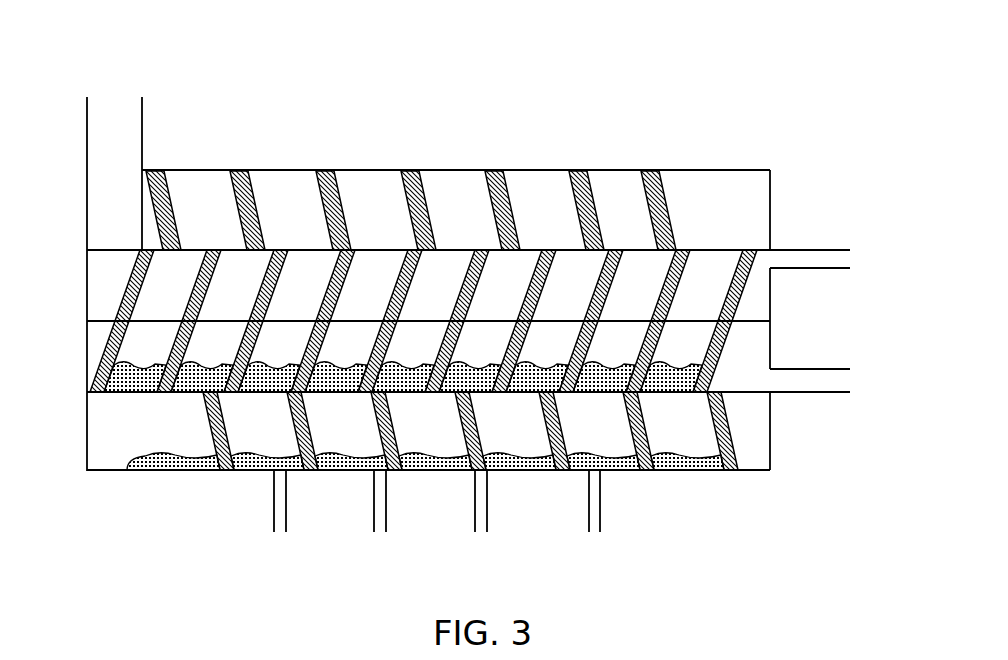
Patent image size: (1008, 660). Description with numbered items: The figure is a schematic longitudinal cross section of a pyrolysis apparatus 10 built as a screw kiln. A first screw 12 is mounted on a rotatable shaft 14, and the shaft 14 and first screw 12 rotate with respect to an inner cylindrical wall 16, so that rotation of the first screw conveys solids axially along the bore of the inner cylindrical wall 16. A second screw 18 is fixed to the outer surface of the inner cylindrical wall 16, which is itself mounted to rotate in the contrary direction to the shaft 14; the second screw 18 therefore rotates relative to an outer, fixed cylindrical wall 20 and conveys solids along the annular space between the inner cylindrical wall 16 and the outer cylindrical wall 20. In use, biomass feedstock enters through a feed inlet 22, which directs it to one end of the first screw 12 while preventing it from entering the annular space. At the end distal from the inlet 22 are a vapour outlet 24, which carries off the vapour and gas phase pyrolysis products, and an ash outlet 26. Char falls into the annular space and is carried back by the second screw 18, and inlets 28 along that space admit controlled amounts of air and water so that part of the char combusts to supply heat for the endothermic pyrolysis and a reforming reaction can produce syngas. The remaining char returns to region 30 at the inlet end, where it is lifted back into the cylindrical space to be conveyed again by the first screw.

The pyrolysis apparatus 10 is at (605, 102).
The first screw 12 is at (688, 270).
The rotatable shaft 14 is at (102, 321).
The inner cylindrical wall 16 is at (445, 248).
The second screw 18 is at (248, 190).
The outer cylindrical wall 20 is at (302, 172).
The feed inlet 22 is at (114, 108).
The vapour outlet 24 is at (842, 258).
The ash outlet 26 is at (845, 378).
The inlets for air and water 28 is at (593, 532).
The region 30 is at (100, 433).